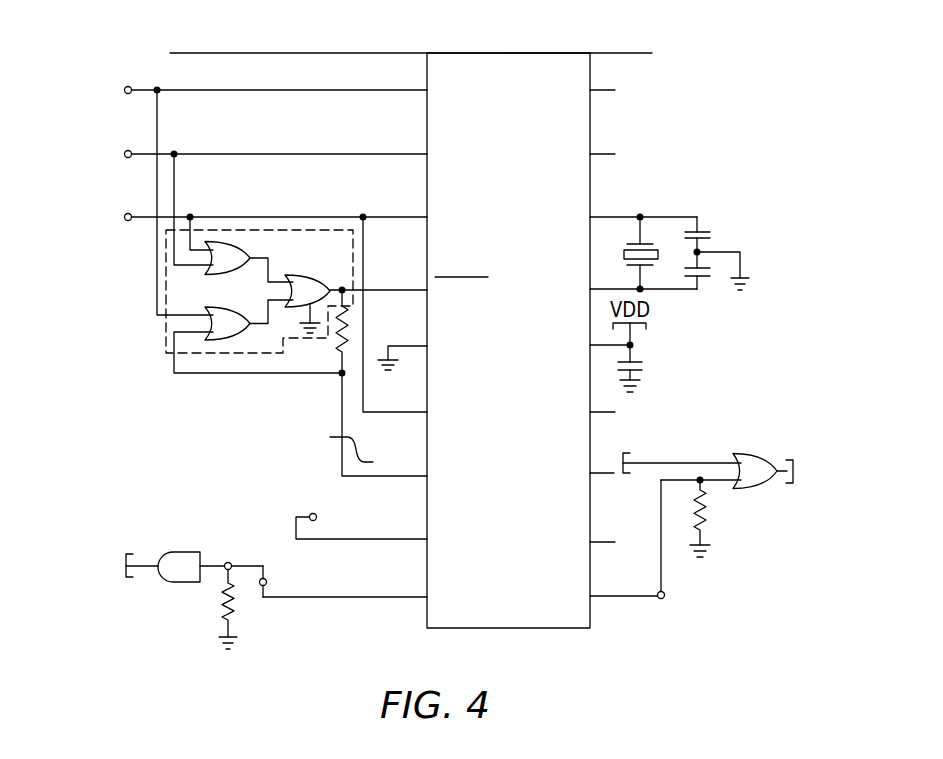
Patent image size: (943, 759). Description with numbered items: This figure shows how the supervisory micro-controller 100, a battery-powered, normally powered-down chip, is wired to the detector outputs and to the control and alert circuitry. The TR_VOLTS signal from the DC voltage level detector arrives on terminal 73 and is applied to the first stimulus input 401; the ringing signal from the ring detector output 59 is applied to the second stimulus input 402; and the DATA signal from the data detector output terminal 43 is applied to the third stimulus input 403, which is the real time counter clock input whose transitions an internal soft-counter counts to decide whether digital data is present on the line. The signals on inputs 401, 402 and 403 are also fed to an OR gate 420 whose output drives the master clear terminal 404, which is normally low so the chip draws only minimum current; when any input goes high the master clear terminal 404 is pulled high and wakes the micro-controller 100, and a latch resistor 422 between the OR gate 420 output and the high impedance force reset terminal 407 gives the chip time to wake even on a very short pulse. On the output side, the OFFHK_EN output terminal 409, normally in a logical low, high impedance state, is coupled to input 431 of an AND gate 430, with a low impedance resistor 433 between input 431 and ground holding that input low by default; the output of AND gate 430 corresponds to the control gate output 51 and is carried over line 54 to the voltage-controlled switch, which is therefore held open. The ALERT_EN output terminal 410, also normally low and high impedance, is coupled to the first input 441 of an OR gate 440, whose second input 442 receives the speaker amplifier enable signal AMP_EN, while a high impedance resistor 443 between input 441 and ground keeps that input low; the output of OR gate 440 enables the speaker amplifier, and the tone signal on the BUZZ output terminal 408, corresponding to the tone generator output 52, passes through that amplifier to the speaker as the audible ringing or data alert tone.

The supervisory micro-controller 100 is at (487, 53).
The output terminal of DC voltage level detector 73 is at (128, 85).
The output of ring detector 59 is at (128, 149).
The output terminal of data detector 43 is at (126, 222).
The first stimulus input 401 is at (414, 89).
The second stimulus input 402 is at (414, 153).
The third stimulus input 403 is at (414, 216).
The master clear terminal 404 is at (417, 289).
The OR gate 420 is at (165, 335).
The latch resistor 422 is at (336, 338).
The force reset terminal 407 is at (355, 477).
The BUZZ output terminal 408 is at (398, 538).
The OFFHK_EN output terminal 409 is at (328, 598).
The ALERT_EN output terminal 410 is at (604, 598).
The AND gate 430 is at (183, 551).
The input of AND gate 431 is at (213, 563).
The output of micro-controller 51 is at (266, 578).
The line 54 is at (143, 572).
The low impedance resistor 433 is at (235, 605).
The OR gate 440 is at (762, 452).
The first input of OR gate 441 is at (723, 485).
The second input of OR gate 442 is at (721, 457).
The high impedance resistor 443 is at (711, 530).
The output of micro-controller 52 is at (660, 592).